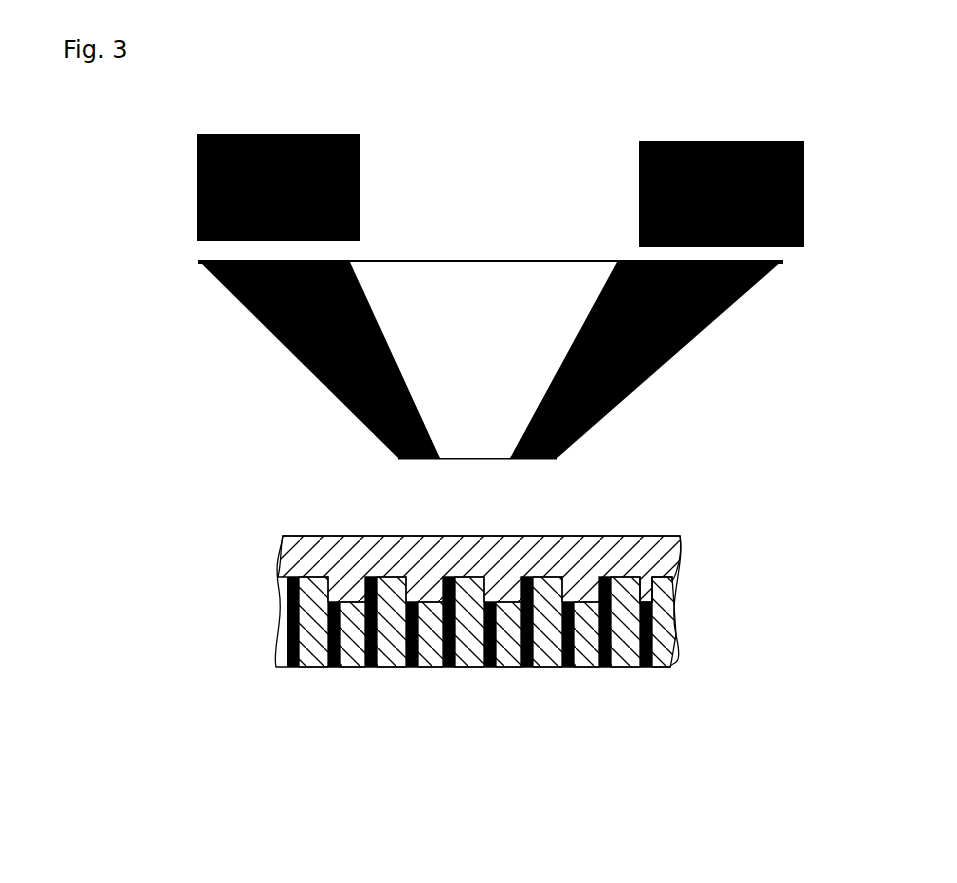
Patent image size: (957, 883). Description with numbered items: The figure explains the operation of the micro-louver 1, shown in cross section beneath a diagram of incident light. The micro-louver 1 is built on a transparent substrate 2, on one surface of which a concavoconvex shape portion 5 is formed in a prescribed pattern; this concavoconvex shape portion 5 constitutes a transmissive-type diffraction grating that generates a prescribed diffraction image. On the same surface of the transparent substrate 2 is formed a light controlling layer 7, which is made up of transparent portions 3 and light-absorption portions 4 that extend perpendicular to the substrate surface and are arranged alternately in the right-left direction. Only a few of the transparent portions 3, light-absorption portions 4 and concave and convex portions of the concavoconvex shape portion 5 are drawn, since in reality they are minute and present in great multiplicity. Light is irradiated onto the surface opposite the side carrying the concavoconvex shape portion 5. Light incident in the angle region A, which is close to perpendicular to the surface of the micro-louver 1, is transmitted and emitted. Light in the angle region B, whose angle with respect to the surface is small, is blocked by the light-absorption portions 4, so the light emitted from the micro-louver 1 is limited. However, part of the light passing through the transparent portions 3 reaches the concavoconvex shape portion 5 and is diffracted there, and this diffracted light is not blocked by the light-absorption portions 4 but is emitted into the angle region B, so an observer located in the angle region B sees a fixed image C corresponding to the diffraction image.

The micro-louver 1 is at (571, 640).
The transparent substrate 2 is at (660, 547).
The transparent portions 3 is at (506, 668).
The light-absorption portions 4 is at (477, 728).
The concavoconvex shape portion 5 is at (640, 596).
The light controlling layer 7 is at (481, 689).
The angle region A is at (443, 283).
The angle region B is at (742, 300).
The fixed image C is at (804, 165).